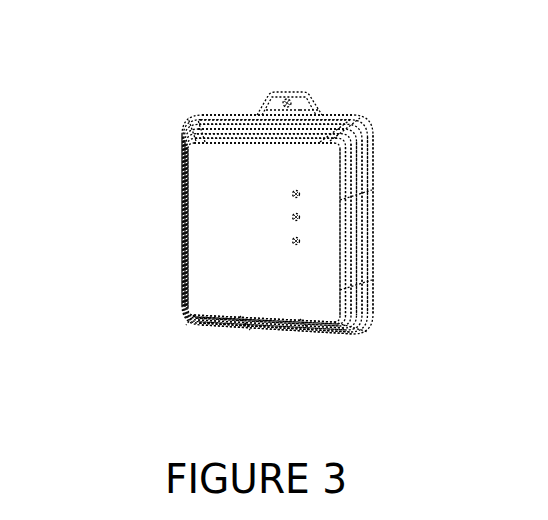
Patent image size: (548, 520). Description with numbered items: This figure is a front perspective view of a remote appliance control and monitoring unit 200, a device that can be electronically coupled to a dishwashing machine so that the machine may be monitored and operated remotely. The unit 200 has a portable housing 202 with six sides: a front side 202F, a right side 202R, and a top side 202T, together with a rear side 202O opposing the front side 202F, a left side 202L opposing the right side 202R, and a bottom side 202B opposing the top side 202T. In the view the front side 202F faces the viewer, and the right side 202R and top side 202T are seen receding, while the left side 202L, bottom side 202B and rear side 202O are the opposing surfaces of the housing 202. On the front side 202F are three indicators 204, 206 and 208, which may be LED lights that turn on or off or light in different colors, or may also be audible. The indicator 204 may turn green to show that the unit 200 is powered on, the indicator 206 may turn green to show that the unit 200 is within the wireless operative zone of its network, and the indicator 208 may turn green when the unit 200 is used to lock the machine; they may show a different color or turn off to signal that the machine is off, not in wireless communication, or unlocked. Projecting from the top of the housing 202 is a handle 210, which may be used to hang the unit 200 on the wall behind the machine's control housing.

The remote appliance control and monitoring unit 200 is at (298, 205).
The portable housing 202 is at (298, 211).
The top side 202T is at (227, 118).
The front side 202F is at (215, 237).
The left side 202L is at (177, 285).
The right side 202R is at (360, 249).
The bottom side 202B is at (280, 332).
The rear side 202O is at (380, 273).
The indicator 204 is at (299, 193).
The indicator 206 is at (299, 216).
The indicator 208 is at (299, 240).
The handle 210 is at (305, 105).